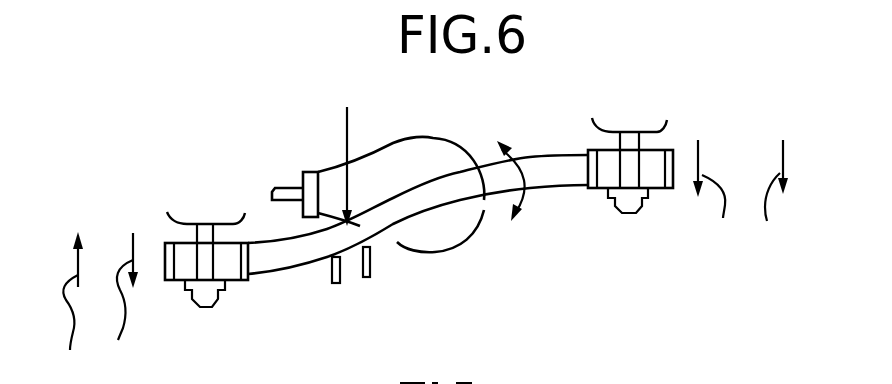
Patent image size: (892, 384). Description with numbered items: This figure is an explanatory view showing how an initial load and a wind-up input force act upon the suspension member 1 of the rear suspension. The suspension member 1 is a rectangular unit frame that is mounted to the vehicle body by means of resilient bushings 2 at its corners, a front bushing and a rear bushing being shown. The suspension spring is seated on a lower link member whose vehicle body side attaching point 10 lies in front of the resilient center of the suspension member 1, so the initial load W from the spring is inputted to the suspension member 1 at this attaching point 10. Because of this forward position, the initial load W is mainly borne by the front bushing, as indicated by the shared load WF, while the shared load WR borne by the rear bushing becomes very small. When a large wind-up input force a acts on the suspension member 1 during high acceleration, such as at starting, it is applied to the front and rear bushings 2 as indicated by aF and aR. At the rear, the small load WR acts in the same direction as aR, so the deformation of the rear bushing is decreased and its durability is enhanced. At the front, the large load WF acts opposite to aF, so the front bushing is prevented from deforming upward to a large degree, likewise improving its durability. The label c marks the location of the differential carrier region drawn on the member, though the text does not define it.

The suspension member 1 is at (285, 266).
The bushings 2 is at (182, 288).
The vehicle body side attaching point 10 is at (350, 249).
The wind-up input force a is at (172, 223).
The differential carrier c is at (437, 137).
The initial load W is at (342, 87).
The shared initial load on front bushing WF is at (141, 347).
The wind-up input force on front bushing aF is at (63, 308).
The shared initial load on rear bushing WR is at (738, 225).
The wind-up input force on rear bushing aR is at (789, 201).